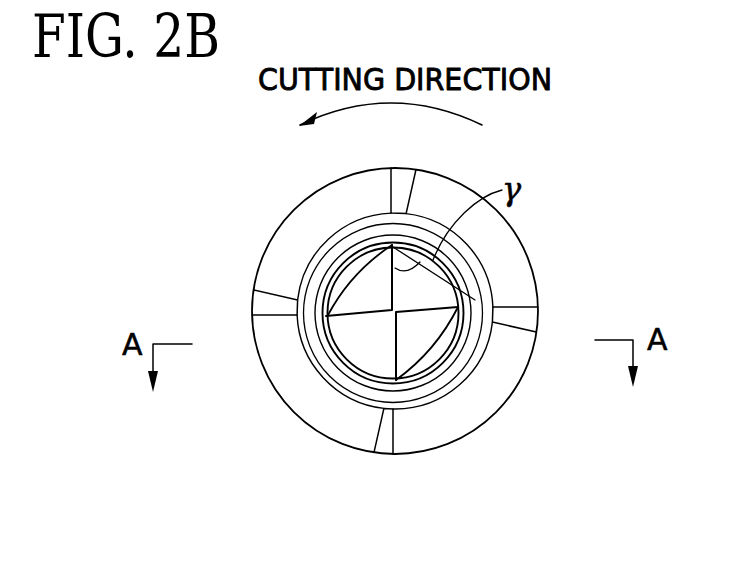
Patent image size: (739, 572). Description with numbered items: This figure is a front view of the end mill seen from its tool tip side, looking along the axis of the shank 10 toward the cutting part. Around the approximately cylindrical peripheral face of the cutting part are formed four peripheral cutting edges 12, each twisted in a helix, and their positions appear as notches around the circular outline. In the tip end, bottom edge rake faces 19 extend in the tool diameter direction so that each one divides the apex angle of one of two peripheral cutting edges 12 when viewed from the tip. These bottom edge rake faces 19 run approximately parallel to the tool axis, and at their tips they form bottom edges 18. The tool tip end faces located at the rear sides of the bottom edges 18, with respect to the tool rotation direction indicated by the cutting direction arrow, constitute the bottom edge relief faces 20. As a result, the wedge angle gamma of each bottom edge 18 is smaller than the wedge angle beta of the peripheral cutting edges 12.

The shank 10 is at (592, 289).
The peripheral cutting edge 12 is at (392, 245).
The bottom edge 18 is at (393, 293).
The bottom edge rake face 19 is at (392, 284).
The bottom edge relief face 20 is at (368, 338).